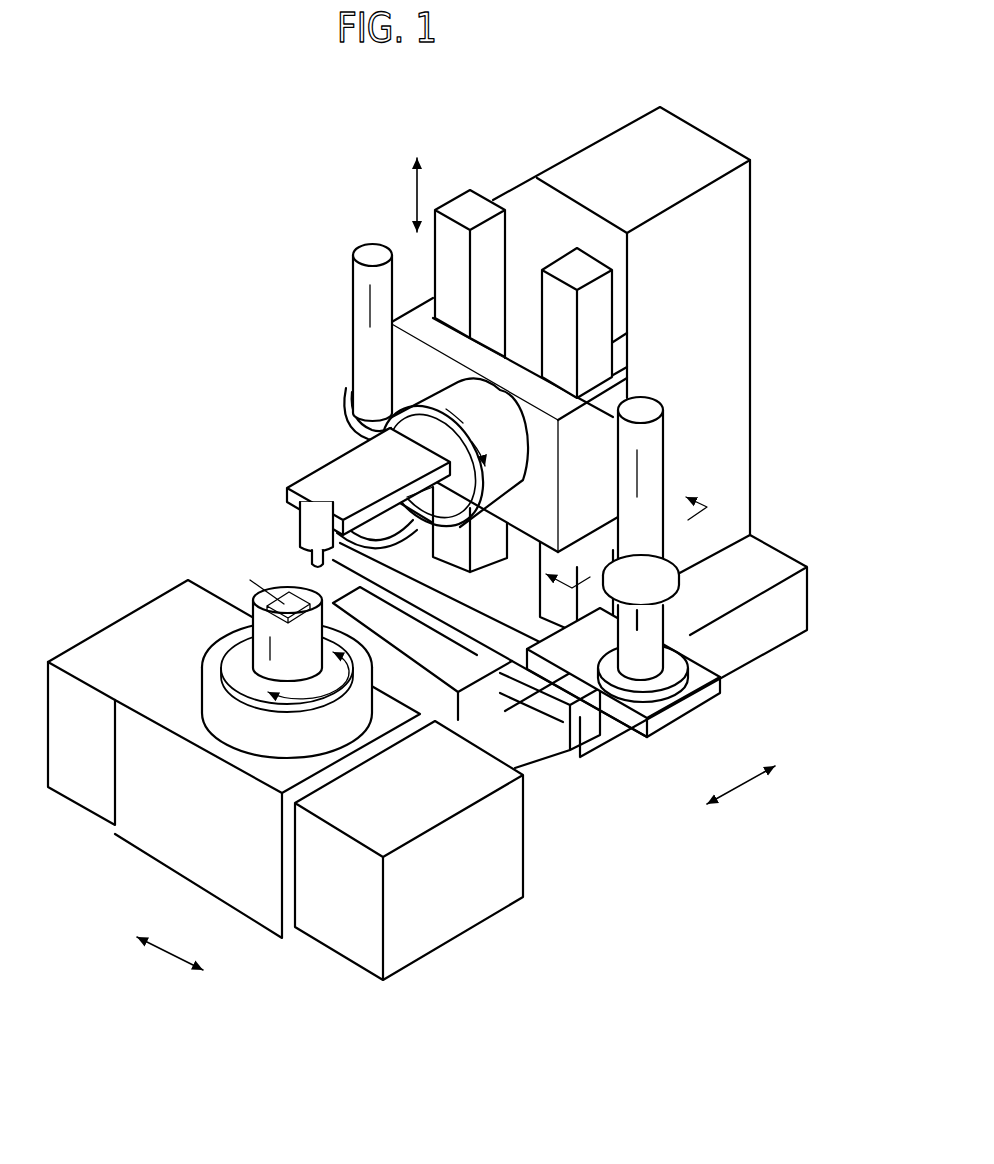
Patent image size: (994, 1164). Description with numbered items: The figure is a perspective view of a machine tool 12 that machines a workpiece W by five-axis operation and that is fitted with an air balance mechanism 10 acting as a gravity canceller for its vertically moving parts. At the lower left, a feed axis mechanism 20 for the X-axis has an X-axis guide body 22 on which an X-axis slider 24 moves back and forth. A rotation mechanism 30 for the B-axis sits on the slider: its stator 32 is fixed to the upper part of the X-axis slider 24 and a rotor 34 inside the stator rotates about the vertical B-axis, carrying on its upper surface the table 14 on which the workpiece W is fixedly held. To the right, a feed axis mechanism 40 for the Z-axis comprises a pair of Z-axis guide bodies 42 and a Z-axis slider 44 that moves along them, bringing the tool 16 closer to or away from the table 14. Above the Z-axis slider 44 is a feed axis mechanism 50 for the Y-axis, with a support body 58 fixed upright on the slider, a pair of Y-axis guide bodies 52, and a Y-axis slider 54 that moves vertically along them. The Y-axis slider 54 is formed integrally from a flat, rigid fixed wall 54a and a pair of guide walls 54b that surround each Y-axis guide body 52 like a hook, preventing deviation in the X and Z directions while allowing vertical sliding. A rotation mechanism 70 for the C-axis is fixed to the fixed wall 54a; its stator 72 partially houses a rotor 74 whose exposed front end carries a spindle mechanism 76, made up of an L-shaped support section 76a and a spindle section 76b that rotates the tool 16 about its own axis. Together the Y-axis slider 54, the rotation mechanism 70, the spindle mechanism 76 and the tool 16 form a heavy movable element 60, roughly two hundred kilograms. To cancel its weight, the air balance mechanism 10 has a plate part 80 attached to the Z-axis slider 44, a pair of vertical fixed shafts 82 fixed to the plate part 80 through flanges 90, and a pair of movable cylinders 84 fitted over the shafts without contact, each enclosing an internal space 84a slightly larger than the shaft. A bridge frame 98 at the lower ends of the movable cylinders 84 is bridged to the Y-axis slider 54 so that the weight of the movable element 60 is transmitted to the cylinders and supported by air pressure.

The air balance mechanism 10 is at (797, 432).
The machine tool 12 is at (219, 153).
The table 14 is at (257, 602).
The tool 16 is at (311, 561).
The feed axis mechanism for the X-axis 20 is at (452, 948).
The X-axis guide body 22 is at (152, 615).
The X-axis slider 24 is at (137, 687).
The rotation mechanism for the B-axis 30 is at (256, 693).
The stator 32 is at (257, 743).
The rotor 34 is at (230, 665).
The feed axis mechanism for the Z-axis 40 is at (598, 764).
The Z-axis guide bodies 42 is at (396, 627).
The Z-axis slider 44 is at (790, 612).
The feed axis mechanism for the Y-axis 50 is at (376, 226).
The Y-axis guide bodies 52 is at (463, 205).
The Y-axis slider 54 is at (502, 425).
The fixed wall 54a is at (407, 358).
The guide walls 54b is at (620, 437).
The support body 58 is at (733, 221).
The movable element 60 is at (527, 544).
The rotation mechanism for the C-axis 70 is at (537, 458).
The stator 72 is at (443, 388).
The rotor 74 is at (407, 432).
The spindle mechanism 76 is at (200, 452).
The L-shaped support section 76a is at (300, 478).
The spindle section 76b is at (300, 525).
The plate part 80 is at (702, 711).
The fixed shafts 82 is at (668, 597).
The movable cylinders 84 is at (665, 458).
The internal space 84a is at (352, 287).
The flange 90 is at (672, 665).
The bridge frame 98 is at (343, 403).